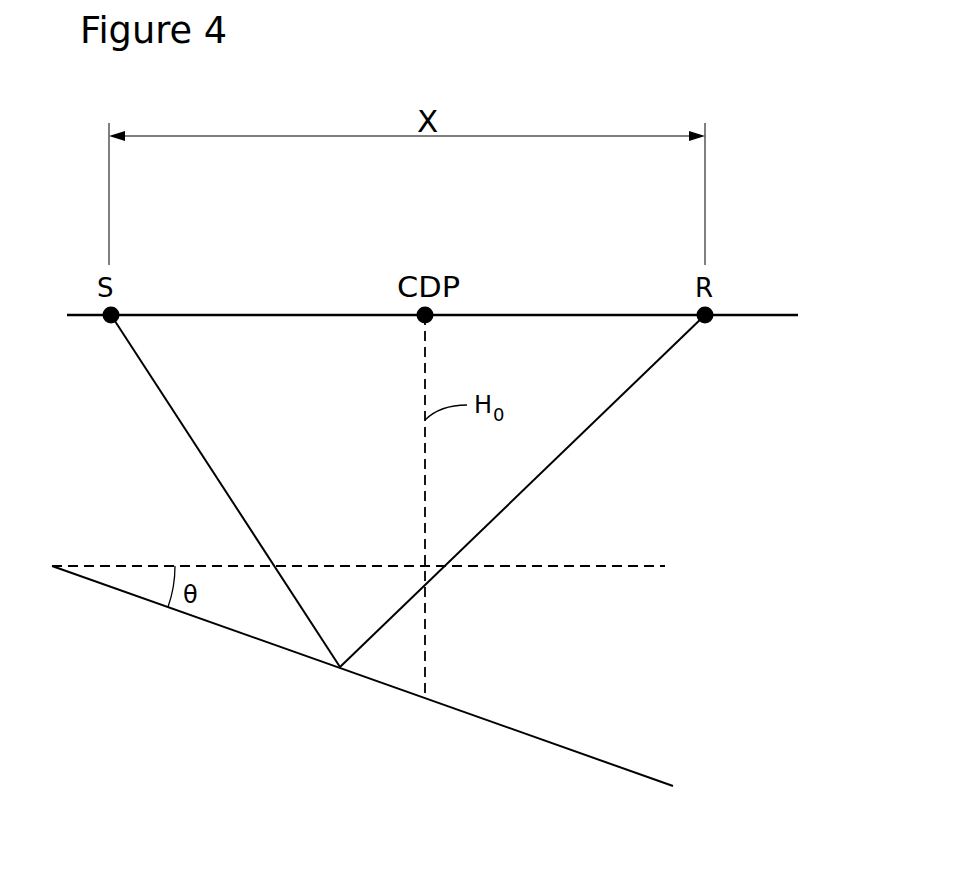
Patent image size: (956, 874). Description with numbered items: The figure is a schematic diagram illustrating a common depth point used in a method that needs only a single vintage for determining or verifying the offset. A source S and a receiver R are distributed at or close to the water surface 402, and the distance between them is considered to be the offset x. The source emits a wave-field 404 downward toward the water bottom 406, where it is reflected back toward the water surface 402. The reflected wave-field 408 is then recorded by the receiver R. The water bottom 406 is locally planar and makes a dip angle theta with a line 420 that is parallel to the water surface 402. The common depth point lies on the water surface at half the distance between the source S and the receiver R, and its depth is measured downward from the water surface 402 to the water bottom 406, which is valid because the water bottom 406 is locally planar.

The water surface 402 is at (767, 315).
The wave-field 404 is at (193, 442).
The water bottom 406 is at (490, 722).
The reflected wave-field 408 is at (572, 443).
The line parallel to the water surface 420 is at (563, 566).